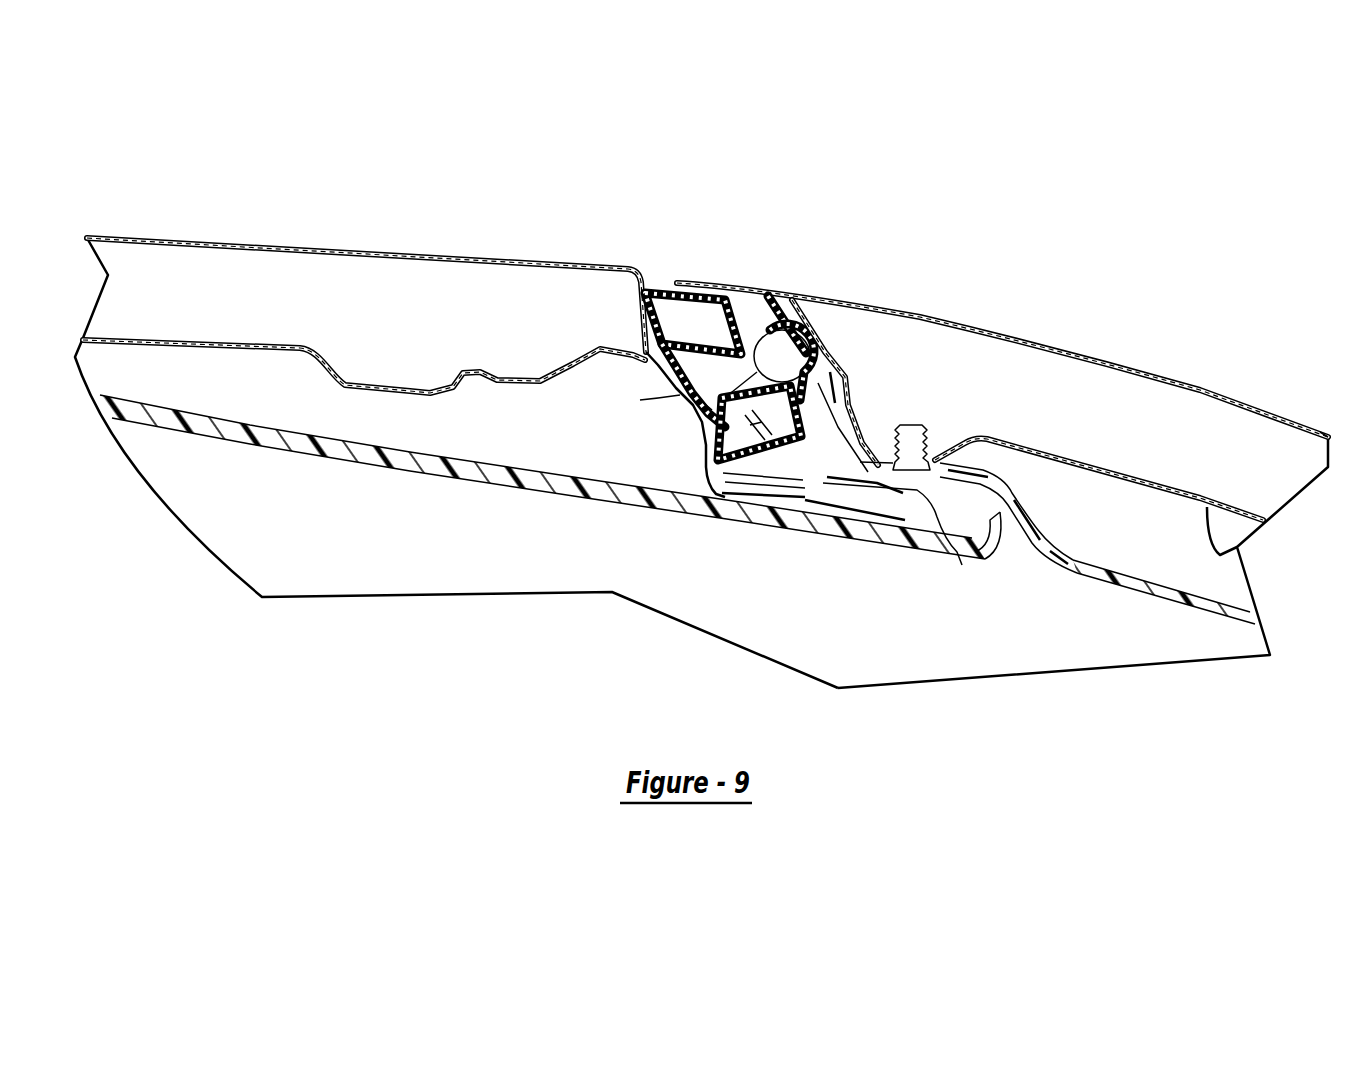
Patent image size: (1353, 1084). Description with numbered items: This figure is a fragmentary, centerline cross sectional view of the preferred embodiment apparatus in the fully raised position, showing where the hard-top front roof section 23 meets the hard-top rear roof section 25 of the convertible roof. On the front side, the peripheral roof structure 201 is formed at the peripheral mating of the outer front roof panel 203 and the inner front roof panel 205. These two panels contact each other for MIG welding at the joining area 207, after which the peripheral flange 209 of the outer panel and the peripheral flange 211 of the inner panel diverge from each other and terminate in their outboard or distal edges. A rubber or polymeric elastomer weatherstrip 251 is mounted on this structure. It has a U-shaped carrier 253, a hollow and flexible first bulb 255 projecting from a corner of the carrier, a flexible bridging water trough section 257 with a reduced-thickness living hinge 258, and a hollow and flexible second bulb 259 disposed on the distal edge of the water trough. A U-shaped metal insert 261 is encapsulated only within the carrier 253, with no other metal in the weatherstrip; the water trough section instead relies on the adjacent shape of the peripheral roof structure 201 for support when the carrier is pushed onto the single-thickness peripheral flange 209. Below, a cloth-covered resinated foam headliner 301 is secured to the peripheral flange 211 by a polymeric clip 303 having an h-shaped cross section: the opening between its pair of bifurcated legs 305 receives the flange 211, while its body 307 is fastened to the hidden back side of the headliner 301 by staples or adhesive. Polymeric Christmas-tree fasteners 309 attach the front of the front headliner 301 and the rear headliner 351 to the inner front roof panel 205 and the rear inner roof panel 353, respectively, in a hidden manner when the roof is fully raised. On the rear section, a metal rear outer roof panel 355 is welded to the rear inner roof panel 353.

The hard-top front roof section 23 is at (411, 211).
The hard-top rear roof section 25 is at (1050, 289).
The peripheral roof structure 201 is at (598, 311).
The outer front roof panel 203 is at (523, 262).
The inner front roof panel 205 is at (203, 343).
The joining area 207 is at (677, 393).
The peripheral flange of outer front roof panel 209 is at (717, 460).
The peripheral flange of inner front roof panel 211 is at (710, 473).
The weatherstrip 251 is at (641, 248).
The U-shaped carrier 253 is at (780, 440).
The first bulb 255 is at (800, 295).
The water trough section 257 is at (650, 372).
The living hinge 258 is at (720, 417).
The second bulb 259 is at (653, 283).
The U-shaped metal insert 261 is at (827, 417).
The headliner 301 is at (242, 423).
The polymeric clip 303 is at (893, 487).
The bifurcated legs 305 is at (767, 477).
The body 307 is at (877, 520).
The Christmas-tree fasteners 309 is at (913, 430).
The rear headliner 351 is at (1170, 593).
The rear inner roof panel 353 is at (1237, 557).
The rear outer roof panel 355 is at (1207, 391).